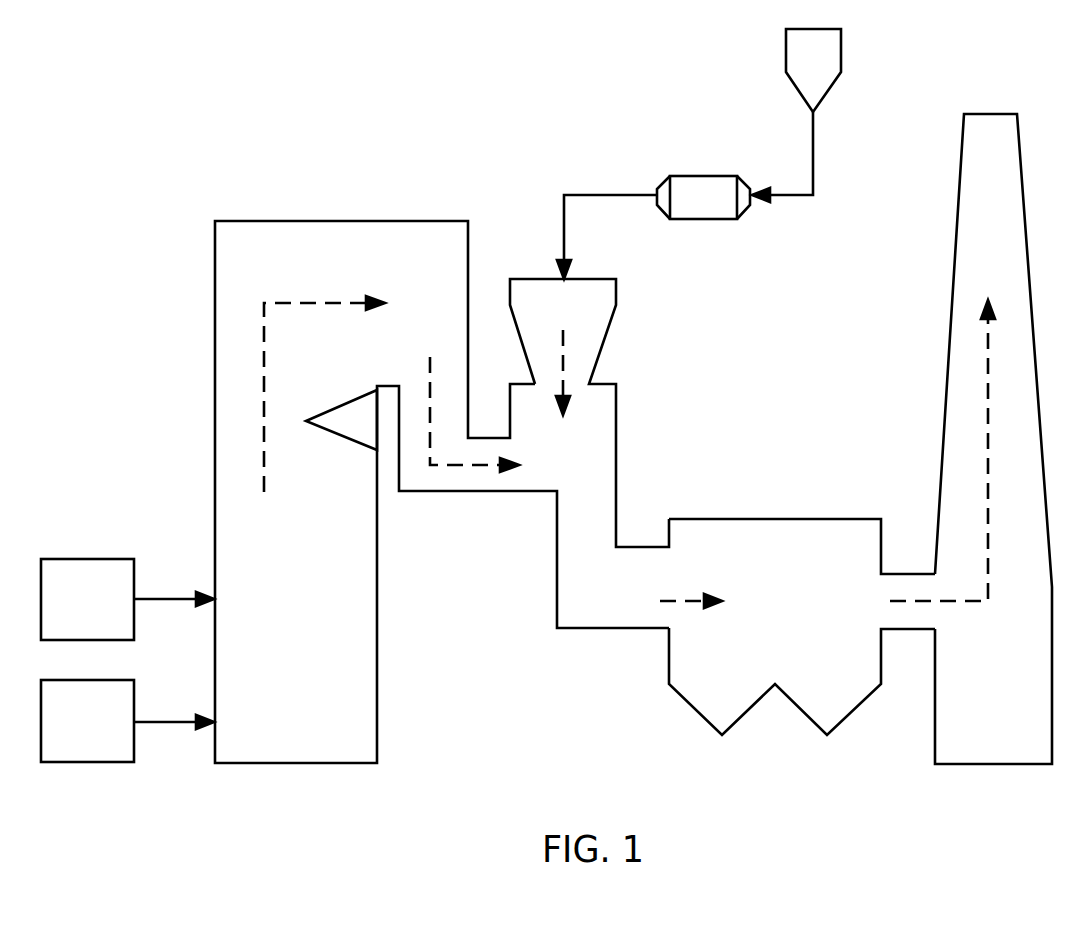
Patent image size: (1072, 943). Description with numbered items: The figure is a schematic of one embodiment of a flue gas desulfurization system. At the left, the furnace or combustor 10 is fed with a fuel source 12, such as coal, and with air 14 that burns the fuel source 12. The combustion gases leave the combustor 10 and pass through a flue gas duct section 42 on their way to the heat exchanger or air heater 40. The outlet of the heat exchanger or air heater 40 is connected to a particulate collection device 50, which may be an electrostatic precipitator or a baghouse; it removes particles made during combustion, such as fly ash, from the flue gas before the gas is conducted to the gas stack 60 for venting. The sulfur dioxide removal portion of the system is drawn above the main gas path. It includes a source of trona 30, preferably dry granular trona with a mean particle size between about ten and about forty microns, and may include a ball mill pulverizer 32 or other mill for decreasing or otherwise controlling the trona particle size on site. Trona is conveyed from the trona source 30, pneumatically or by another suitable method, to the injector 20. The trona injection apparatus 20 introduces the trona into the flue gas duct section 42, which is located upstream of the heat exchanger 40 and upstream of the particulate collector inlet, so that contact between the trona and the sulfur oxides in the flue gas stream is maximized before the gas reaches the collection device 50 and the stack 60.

The furnace or combustor 10 is at (280, 680).
The fuel source 12 is at (72, 610).
The air 14 is at (72, 732).
The injector 20 is at (548, 314).
The source of trona 30 is at (798, 64).
The ball mill pulverizer 32 is at (689, 207).
The heat exchanger or air heater 40 is at (602, 617).
The flue gas duct section 42 is at (548, 449).
The particulate collection device 50 is at (764, 632).
The gas stack 60 is at (980, 709).